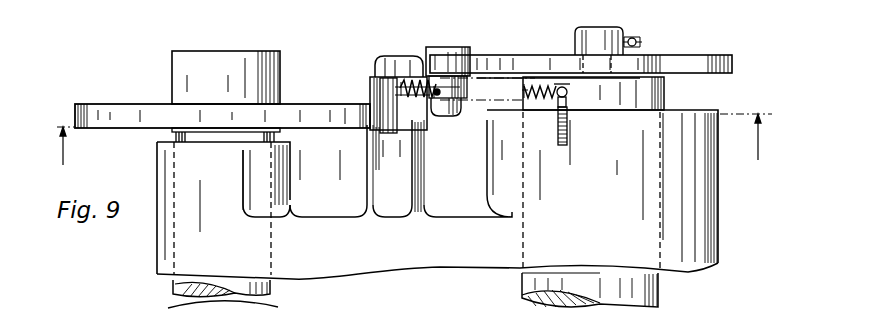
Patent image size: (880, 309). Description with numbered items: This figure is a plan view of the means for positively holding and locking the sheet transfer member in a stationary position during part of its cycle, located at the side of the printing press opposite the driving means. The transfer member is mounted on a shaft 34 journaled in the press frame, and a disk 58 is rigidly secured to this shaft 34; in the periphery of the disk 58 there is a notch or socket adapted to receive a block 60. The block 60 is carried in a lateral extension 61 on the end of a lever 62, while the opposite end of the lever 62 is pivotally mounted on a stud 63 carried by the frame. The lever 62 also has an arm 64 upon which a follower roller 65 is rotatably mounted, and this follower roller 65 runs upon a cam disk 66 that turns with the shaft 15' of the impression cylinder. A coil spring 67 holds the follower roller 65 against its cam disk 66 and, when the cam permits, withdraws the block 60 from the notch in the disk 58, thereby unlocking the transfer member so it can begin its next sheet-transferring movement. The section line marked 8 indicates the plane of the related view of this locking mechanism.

The disk 58 is at (110, 108).
The block 60 is at (368, 133).
The lateral extension 61 is at (393, 128).
The lever 62 is at (383, 90).
The stud 63 is at (422, 172).
The arm 64 is at (445, 112).
The follower roller 65 is at (466, 52).
The cam disk 66 is at (690, 60).
The coil spring 67 is at (553, 100).
The shaft 34 is at (270, 289).
The shaft 15' is at (614, 290).
The section line 8- 8 is at (407, 139).